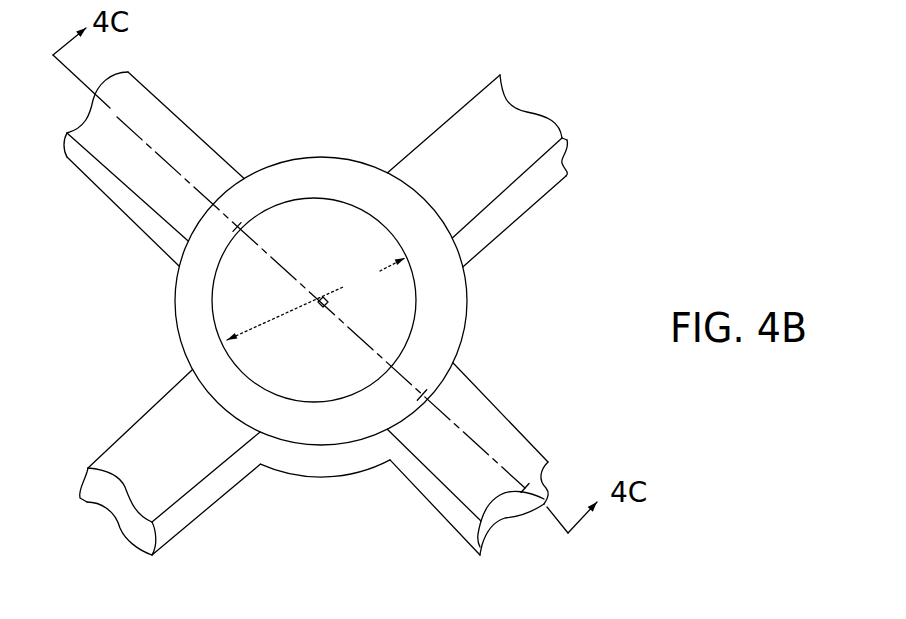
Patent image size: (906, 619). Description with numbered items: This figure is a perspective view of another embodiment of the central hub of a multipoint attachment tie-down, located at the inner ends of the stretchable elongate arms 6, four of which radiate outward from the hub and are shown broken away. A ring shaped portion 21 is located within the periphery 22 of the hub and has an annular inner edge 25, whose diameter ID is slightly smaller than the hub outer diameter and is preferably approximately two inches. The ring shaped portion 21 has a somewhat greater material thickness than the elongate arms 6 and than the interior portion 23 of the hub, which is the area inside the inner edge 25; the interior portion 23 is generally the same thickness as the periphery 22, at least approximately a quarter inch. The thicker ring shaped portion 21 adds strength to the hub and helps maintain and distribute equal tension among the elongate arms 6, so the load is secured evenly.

The elongate arms 6 is at (163, 122).
The ring shaped portion 21 is at (282, 187).
The periphery 22 is at (467, 333).
The interior portion 23 is at (335, 243).
The annular inner edge 25 is at (418, 302).